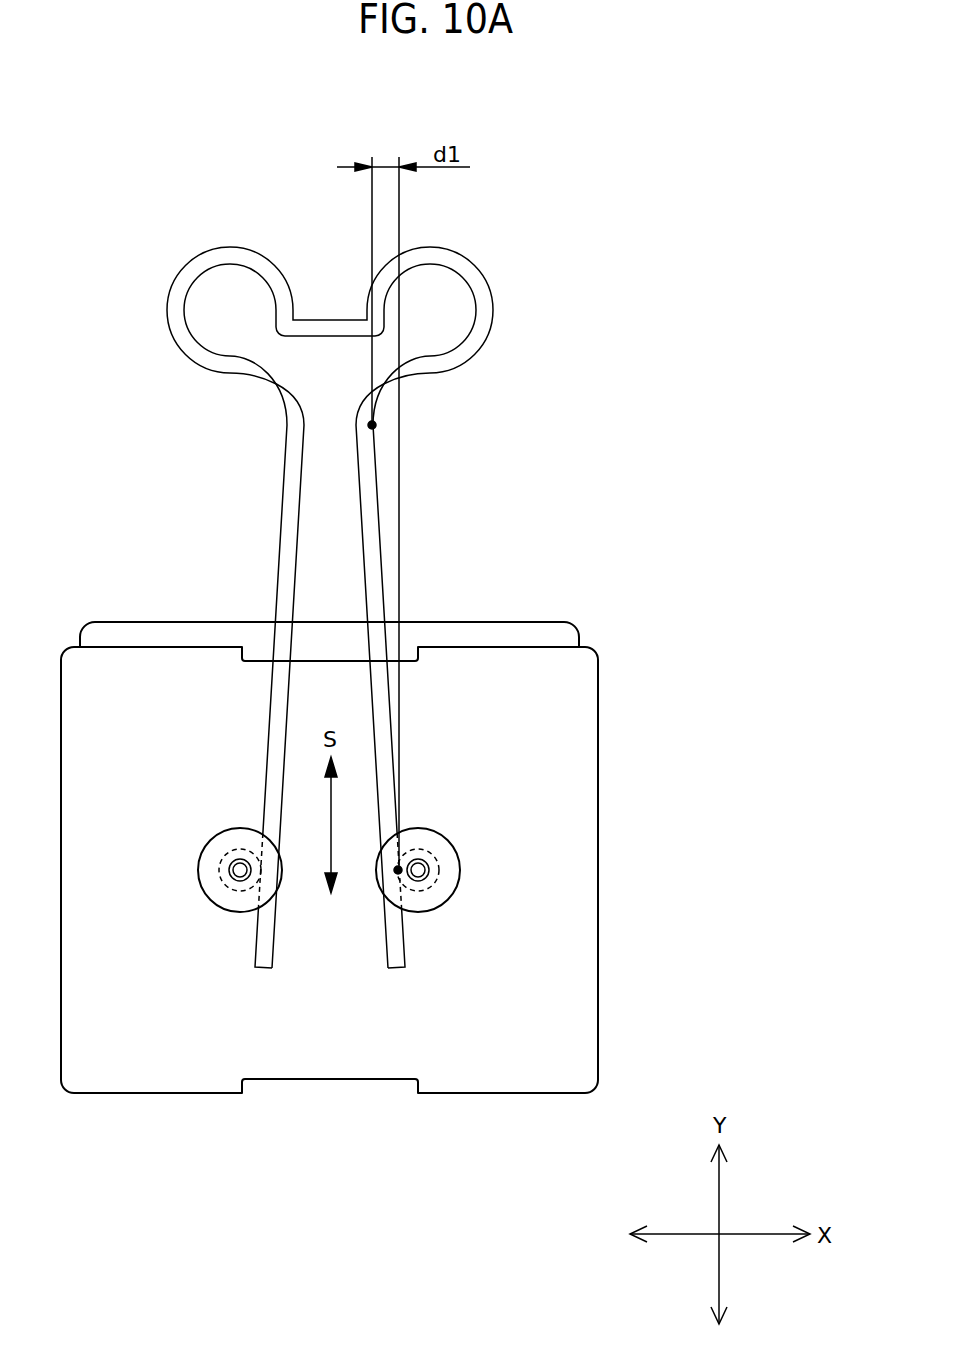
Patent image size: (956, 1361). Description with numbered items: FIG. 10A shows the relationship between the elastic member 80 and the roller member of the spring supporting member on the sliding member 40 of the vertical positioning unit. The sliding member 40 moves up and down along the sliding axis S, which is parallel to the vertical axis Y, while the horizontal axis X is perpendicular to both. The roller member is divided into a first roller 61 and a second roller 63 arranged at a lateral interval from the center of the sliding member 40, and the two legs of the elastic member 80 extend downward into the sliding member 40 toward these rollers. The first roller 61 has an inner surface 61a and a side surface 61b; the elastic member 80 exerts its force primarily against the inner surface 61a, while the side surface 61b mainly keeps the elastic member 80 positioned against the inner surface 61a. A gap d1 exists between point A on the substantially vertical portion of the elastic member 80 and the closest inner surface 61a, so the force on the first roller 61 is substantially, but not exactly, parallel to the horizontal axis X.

The sliding member 40 is at (590, 777).
The first roller 61 is at (453, 891).
The inner surface 61a is at (433, 883).
The side surface 61b is at (458, 885).
The second roller 63 is at (210, 892).
The elastic member 80 is at (292, 506).